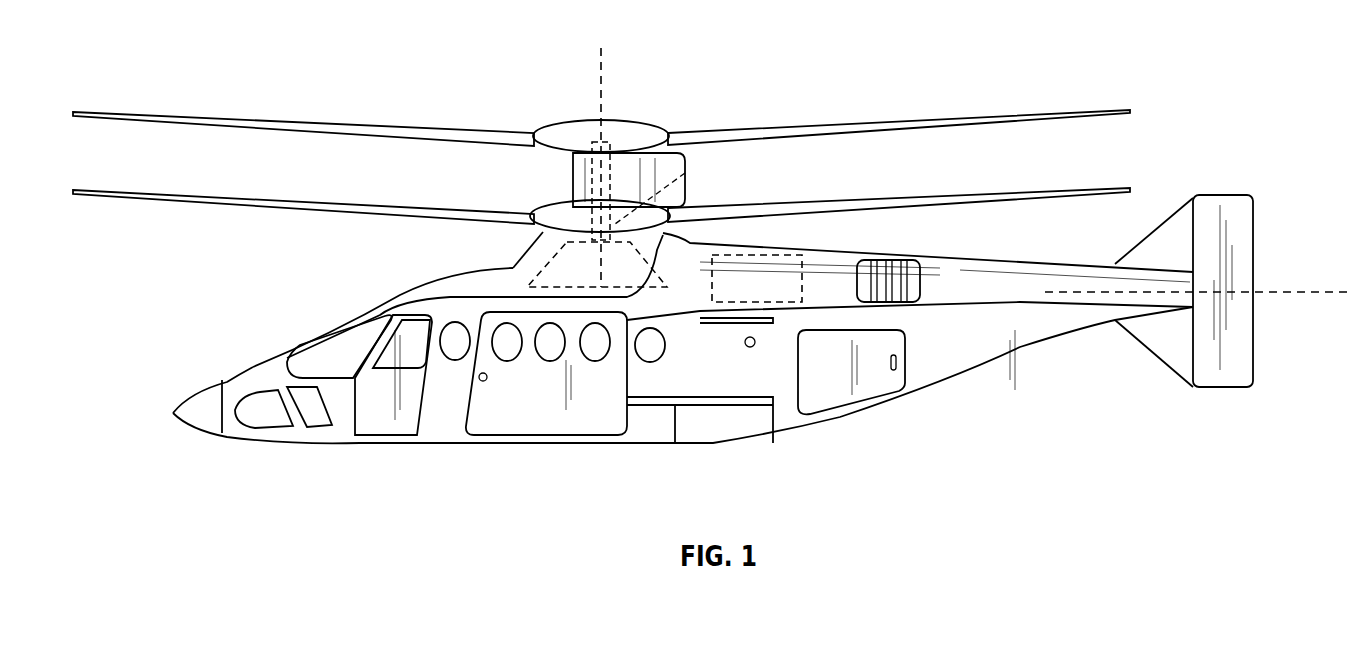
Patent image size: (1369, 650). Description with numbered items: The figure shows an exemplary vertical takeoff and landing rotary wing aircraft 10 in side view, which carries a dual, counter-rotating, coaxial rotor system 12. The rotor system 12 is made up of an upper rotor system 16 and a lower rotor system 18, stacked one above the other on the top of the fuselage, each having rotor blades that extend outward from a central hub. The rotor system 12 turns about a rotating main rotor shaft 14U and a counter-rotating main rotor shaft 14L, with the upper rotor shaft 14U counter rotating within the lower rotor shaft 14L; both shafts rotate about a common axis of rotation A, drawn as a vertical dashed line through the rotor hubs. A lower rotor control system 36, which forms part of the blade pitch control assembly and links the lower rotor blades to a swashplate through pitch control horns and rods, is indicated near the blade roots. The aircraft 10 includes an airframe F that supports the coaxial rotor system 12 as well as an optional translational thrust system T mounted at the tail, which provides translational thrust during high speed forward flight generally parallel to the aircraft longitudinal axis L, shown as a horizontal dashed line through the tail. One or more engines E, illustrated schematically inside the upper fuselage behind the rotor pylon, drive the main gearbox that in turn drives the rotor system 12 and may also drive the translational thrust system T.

The rotary wing aircraft 10 is at (772, 56).
The dual, counter-rotating, coaxial rotor system 12 is at (641, 124).
The upper rotor system 16 is at (669, 129).
The lower rotor system 18 is at (532, 228).
The lower rotor control system 36 is at (531, 151).
The upper main rotor shaft 14U is at (687, 173).
The lower main rotor shaft 14L is at (597, 214).
The axis of rotation A is at (598, 68).
The engines E is at (790, 279).
The airframe F is at (533, 422).
The translational thrust system T is at (1233, 178).
The aircraft longitudinal axis L is at (1283, 293).